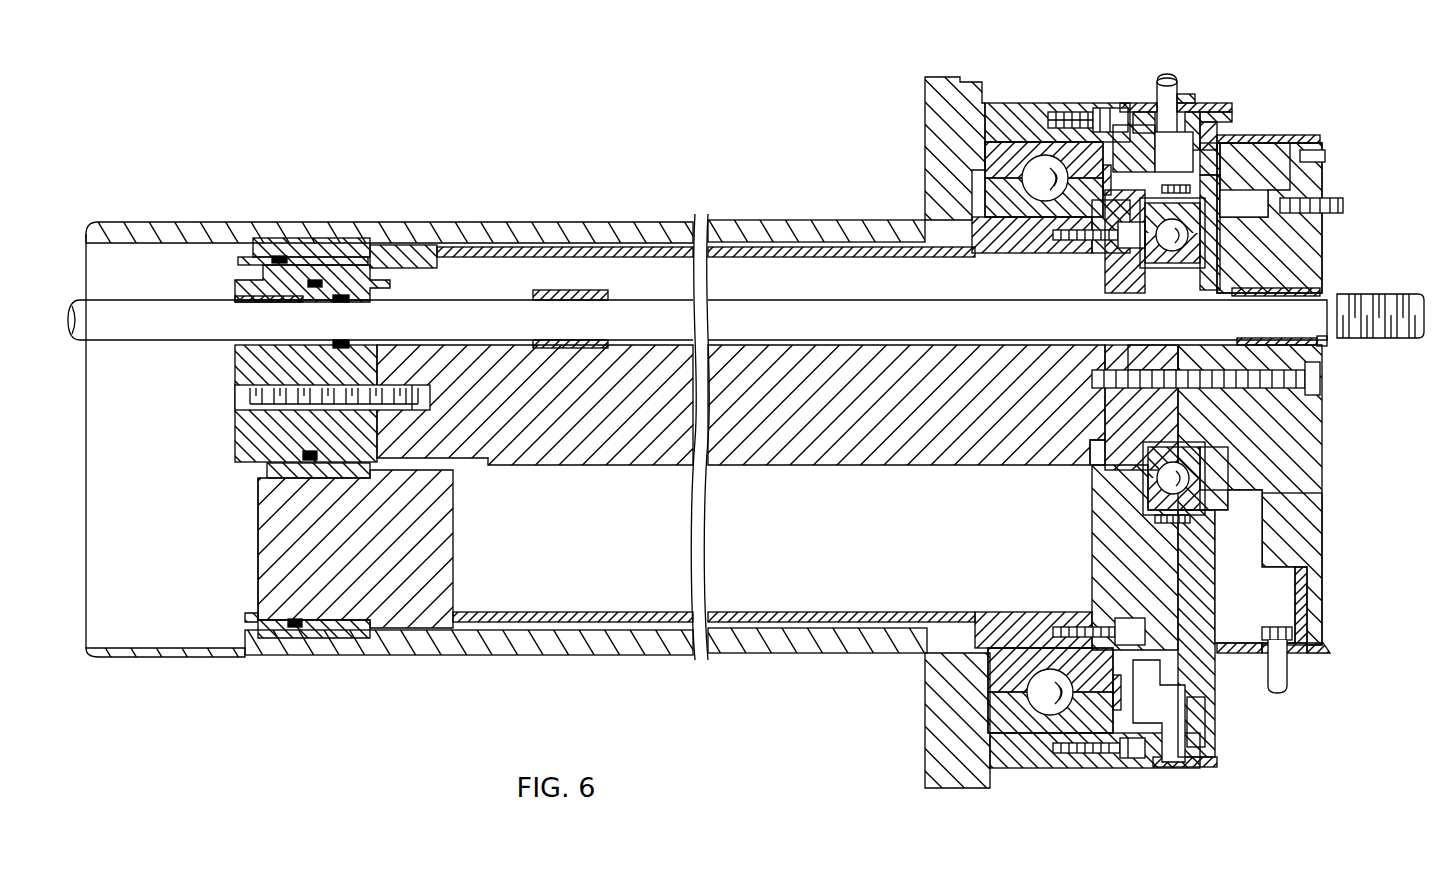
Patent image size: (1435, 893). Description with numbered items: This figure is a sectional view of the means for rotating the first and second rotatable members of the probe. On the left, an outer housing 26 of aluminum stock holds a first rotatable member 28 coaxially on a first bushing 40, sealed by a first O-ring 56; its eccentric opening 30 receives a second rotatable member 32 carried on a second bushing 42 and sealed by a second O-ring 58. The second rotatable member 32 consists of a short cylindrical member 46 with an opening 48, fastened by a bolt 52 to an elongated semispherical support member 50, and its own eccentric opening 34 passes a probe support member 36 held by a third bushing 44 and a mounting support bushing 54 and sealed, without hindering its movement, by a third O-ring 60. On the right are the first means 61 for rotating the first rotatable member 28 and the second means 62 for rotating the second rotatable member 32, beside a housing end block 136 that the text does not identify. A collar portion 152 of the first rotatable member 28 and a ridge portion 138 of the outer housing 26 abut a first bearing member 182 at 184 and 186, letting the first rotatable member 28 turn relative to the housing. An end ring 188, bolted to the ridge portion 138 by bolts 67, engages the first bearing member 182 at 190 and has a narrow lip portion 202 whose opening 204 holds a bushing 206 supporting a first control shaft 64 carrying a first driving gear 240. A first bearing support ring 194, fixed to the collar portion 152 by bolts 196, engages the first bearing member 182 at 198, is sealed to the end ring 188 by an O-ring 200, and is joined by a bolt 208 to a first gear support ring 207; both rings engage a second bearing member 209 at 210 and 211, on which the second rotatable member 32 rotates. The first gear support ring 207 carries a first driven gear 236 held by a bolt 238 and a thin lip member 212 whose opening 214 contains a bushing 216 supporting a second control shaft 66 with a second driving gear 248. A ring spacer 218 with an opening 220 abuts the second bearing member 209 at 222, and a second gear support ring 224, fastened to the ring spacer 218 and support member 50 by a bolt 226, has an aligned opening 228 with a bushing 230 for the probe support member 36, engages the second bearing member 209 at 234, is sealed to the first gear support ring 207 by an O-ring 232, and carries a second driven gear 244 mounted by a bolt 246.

The outer housing 26 is at (515, 652).
The first rotatable member 28 is at (455, 545).
The eccentrically disposed opening 30 is at (258, 484).
The second rotatable member 32 is at (418, 402).
The eccentrically disposed opening 34 is at (318, 303).
The probe support member 36 is at (475, 330).
The first bushing 40 is at (253, 247).
The second bushing 42 is at (240, 262).
The third bushing 44 is at (236, 302).
The short cylindrical member 46 is at (235, 438).
The opening 48 is at (412, 384).
The elongated semispherical support member 50 is at (558, 414).
The bolt 52 is at (238, 398).
The mounting support bushing 54 is at (580, 293).
The first O-ring 56 is at (280, 256).
The second O-ring 58 is at (318, 280).
The third O-ring 60 is at (342, 340).
The first means for rotating the first rotatable member 61 is at (1300, 92).
The second means for rotating the second rotatable member 62 is at (1242, 787).
The first control shaft 64 is at (1160, 74).
The second control shaft 66 is at (1287, 688).
The bolts 67 is at (1068, 112).
The housing end block 136 is at (940, 133).
The ridge portion 138 is at (1017, 115).
The collar portion 152 is at (980, 258).
The first bearing member 182 is at (1045, 178).
The abutment of collar portion with first bearing member 184 is at (985, 170).
The abutment of ridge portion with first bearing member 186 is at (985, 152).
The end ring 188 is at (1118, 108).
The engagement of end ring with first bearing member 190 is at (1100, 146).
The first bearing support ring 194 is at (1100, 253).
The bolts 196 is at (1055, 253).
The engagement of first bearing support ring with first bearing member 198 is at (1104, 200).
The O-ring 200 is at (1153, 443).
The narrow lip portion 202 is at (1200, 104).
The opening 204 is at (1216, 112).
The bushing 206 is at (1186, 94).
The first gear support ring 207 is at (1222, 158).
The bolt 208 is at (1222, 176).
The second bearing member 209 is at (1172, 265).
The engagement of first bearing support ring with second bearing member 210 is at (1162, 189).
The engagement of first gear support ring with second bearing member 211 is at (1220, 205).
The thin lip member 212 is at (1328, 648).
The opening 214 is at (1290, 653).
The bushing 216 is at (1225, 653).
The ring spacer 218 is at (1130, 293).
The opening 220 is at (1140, 350).
The abutment of ring spacer with second bearing member 222 is at (1110, 462).
The second gear support ring 224 is at (1322, 258).
The bolt 226 is at (1320, 378).
The opening 228 is at (1225, 283).
The bushing 230 is at (1327, 341).
The O-ring 232 is at (1200, 232).
The engagement of second gear support ring with second bearing member 234 is at (1190, 238).
The first driven gear 236 is at (1200, 130).
The bolt 238 is at (1217, 136).
The first driving gear 240 is at (1145, 112).
The second driven gear 244 is at (1285, 143).
The bolt 246 is at (1310, 190).
The second driving gear 248 is at (1278, 627).